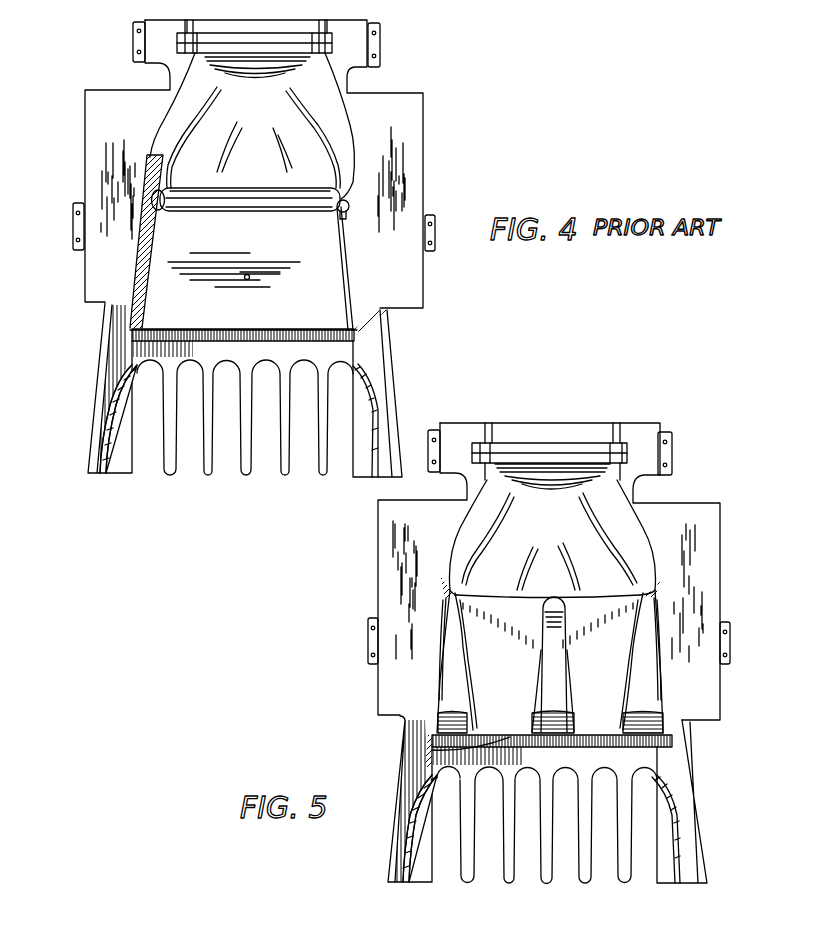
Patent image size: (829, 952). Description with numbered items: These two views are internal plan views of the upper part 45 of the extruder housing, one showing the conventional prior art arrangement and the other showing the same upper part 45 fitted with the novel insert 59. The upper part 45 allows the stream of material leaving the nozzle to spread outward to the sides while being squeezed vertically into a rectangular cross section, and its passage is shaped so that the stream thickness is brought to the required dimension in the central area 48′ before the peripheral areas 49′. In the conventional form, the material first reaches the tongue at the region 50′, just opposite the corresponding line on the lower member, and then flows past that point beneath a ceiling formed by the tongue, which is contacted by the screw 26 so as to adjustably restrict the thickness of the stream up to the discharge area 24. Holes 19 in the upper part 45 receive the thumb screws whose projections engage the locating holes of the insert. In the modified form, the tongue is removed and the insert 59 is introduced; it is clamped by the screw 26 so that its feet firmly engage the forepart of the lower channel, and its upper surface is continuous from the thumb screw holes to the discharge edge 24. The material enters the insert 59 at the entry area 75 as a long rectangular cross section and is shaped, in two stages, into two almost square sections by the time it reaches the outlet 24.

In FIG. 4, the upper part of the housing 45 is at (143, 127).
In FIG. 4, the central area 48′ is at (303, 142).
In FIG. 4, the peripheral area 49′ is at (345, 158).
In FIG. 4, the region where material first reaches the tongue 50′ is at (265, 190).
In FIG. 4, the holes 19 is at (150, 203).
In FIG. 4, the screw 26 is at (250, 280).
In FIG. 5, the entry area 75 is at (602, 583).
In FIG. 5, the insert 59 is at (605, 668).
In FIG. 5, the discharge area 24 is at (428, 745).